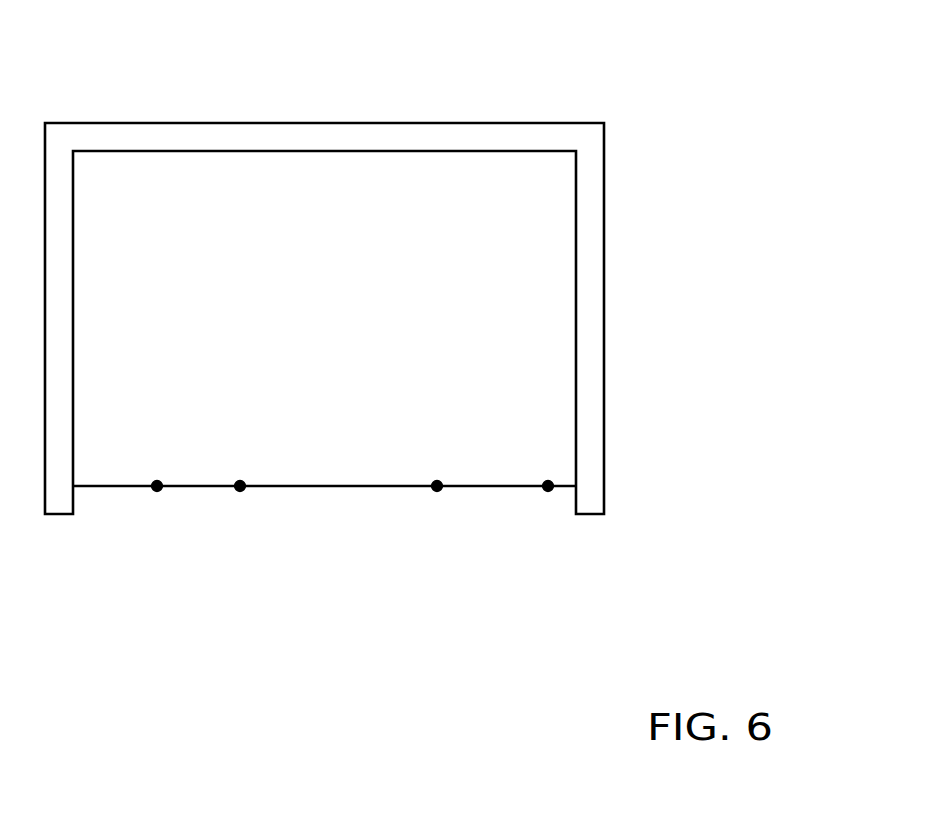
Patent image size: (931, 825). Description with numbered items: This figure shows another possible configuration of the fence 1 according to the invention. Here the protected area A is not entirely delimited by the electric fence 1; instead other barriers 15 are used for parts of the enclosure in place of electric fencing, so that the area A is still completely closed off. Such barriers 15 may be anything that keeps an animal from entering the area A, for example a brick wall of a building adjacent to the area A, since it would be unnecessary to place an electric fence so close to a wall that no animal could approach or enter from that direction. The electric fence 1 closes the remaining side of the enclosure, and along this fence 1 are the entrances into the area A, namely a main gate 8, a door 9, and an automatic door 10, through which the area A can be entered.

The barriers 15 is at (561, 123).
The area A is at (470, 270).
The automatic door 10 is at (115, 486).
The fence 1 is at (198, 486).
The main gate 8 is at (333, 486).
The door 9 is at (506, 486).